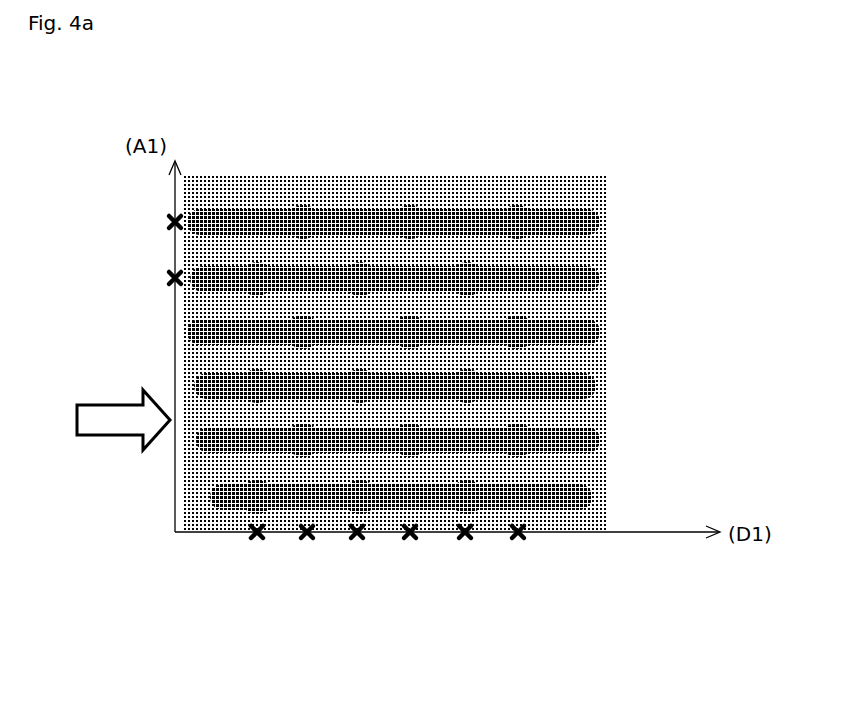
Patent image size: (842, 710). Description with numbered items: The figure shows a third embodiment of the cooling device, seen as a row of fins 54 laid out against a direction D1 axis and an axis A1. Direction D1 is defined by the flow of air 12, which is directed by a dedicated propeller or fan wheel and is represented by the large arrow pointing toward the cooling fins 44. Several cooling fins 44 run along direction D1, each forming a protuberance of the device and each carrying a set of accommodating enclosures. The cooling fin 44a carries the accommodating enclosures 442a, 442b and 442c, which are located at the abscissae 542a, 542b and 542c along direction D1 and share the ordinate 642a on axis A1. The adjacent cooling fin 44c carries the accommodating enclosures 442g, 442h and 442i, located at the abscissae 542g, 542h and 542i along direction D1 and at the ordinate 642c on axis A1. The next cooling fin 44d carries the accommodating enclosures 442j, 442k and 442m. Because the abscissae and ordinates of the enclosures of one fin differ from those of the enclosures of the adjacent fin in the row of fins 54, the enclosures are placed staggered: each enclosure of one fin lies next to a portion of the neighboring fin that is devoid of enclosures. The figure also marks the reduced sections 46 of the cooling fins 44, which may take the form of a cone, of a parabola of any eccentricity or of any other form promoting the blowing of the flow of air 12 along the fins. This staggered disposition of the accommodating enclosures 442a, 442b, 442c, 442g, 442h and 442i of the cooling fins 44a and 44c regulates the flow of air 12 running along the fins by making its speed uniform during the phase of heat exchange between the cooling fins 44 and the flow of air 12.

The flow of air 12 is at (140, 434).
The cooling fin 44 is at (600, 490).
The cooling fin 44a is at (575, 208).
The cooling fin 44c is at (588, 268).
The cooling fin 44d is at (598, 332).
The accommodating enclosure 442a is at (303, 205).
The accommodating enclosure 442b is at (410, 205).
The accommodating enclosure 442c is at (517, 205).
The accommodating enclosure 442g is at (257, 262).
The accommodating enclosure 442h is at (360, 262).
The accommodating enclosure 442i is at (467, 262).
The accommodating enclosure 442j is at (288, 338).
The accommodating enclosure 442k is at (423, 349).
The accommodating enclosure 442m is at (529, 320).
The reduced section 46 is at (187, 324).
The row of fins 54 is at (408, 612).
The abscissa 542a is at (307, 538).
The abscissa 542b is at (410, 538).
The abscissa 542c is at (605, 550).
The abscissa 542g is at (257, 538).
The abscissa 542h is at (357, 538).
The abscissa 542i is at (465, 538).
The ordinate 642a is at (172, 226).
The ordinate 642c is at (172, 281).